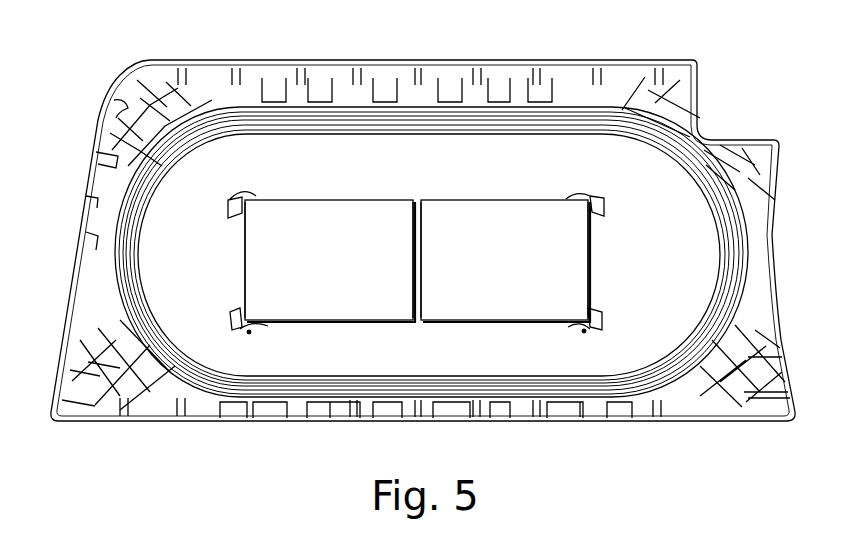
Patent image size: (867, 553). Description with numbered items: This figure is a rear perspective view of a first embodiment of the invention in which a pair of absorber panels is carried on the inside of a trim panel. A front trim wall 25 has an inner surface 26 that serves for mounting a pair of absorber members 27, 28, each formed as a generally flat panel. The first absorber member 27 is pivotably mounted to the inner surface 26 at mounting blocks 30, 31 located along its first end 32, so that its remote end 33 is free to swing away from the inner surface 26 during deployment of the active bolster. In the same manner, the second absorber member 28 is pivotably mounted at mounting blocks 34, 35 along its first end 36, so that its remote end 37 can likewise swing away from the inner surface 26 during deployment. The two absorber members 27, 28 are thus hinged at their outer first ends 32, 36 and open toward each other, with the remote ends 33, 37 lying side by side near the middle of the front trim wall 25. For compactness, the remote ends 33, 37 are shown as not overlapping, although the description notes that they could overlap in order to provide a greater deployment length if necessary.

The front trim wall 25 is at (300, 50).
The inner surface 26 is at (487, 152).
The absorber member 27 is at (350, 301).
The absorber member 28 is at (510, 301).
The mounting block 30 is at (244, 192).
The mounting block 31 is at (240, 327).
The first end 32 is at (245, 258).
The remote end 33 is at (417, 217).
The mounting block 34 is at (590, 192).
The mounting block 35 is at (598, 327).
The first end 36 is at (590, 262).
The remote end 37 is at (423, 283).